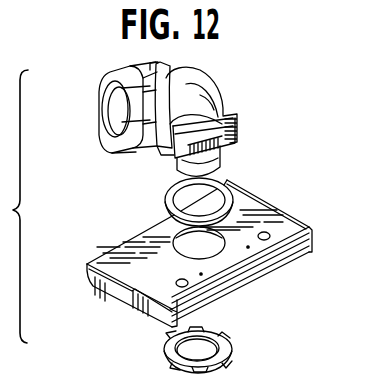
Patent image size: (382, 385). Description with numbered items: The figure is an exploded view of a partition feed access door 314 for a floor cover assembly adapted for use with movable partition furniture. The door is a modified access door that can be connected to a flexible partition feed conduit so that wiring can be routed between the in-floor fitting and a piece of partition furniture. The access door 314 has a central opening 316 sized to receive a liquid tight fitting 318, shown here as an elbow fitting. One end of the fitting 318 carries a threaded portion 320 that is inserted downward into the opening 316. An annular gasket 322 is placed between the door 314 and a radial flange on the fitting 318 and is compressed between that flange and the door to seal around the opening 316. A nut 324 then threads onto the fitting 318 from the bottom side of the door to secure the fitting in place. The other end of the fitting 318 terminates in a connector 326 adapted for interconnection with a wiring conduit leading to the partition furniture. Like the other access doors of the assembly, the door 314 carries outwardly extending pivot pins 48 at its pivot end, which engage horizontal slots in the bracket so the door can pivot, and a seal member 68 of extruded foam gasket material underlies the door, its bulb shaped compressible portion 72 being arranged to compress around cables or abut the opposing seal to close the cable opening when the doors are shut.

The partition feed access door 314 is at (272, 193).
The central opening 316 is at (176, 232).
The liquid tight fitting 318 is at (213, 84).
The threaded portion 320 is at (238, 150).
The annular gasket 322 is at (238, 117).
The nut 324 is at (232, 352).
The connector 326 is at (108, 80).
The pivot pins 48 is at (86, 270).
The seal member 68 is at (257, 270).
The compressible portion 72 is at (283, 257).